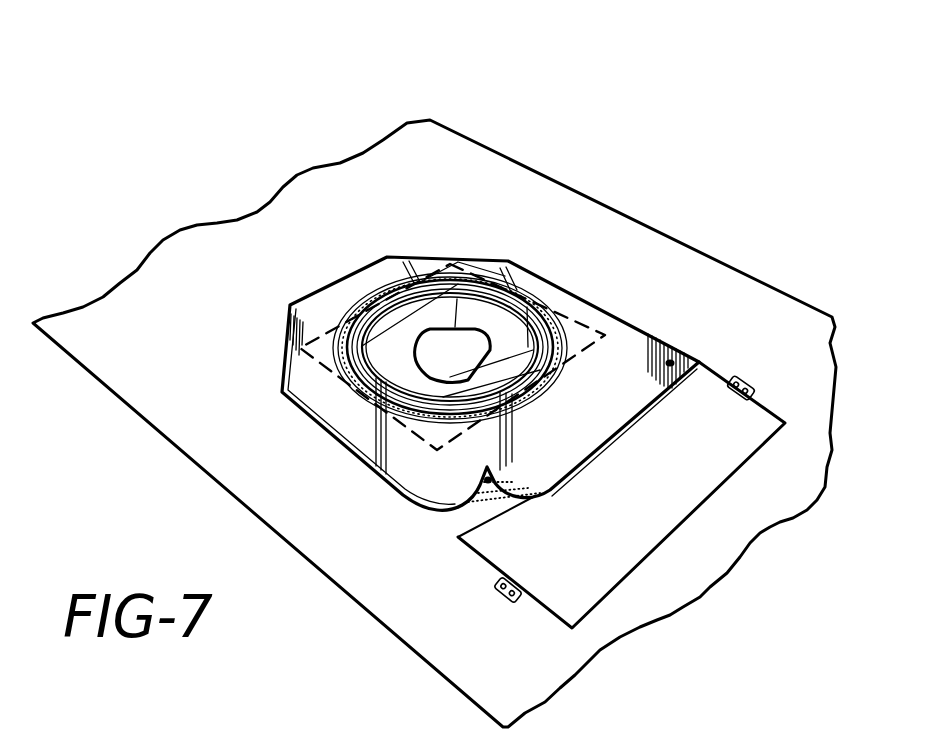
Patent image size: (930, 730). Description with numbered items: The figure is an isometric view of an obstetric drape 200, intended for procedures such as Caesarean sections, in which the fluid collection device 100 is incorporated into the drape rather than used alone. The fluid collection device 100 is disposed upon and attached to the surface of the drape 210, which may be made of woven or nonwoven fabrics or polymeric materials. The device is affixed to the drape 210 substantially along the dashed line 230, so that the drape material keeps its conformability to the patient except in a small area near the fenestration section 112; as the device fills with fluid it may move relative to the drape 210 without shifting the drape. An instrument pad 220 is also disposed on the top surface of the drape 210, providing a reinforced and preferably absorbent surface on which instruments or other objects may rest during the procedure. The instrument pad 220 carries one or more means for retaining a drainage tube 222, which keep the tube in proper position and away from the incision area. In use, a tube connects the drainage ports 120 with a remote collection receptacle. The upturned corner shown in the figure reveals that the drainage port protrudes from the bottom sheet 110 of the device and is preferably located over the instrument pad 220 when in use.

The fluid collection device 100 is at (640, 317).
The bottom sheet 110 is at (430, 511).
The fenestration section 112 is at (390, 342).
The drainage ports 120 is at (672, 360).
The obstetric drape 200 is at (596, 144).
The drape 210 is at (232, 450).
The instrument pad 220 is at (622, 548).
The means for retaining a drainage tube 222 is at (752, 372).
The dashed line 230 is at (569, 323).